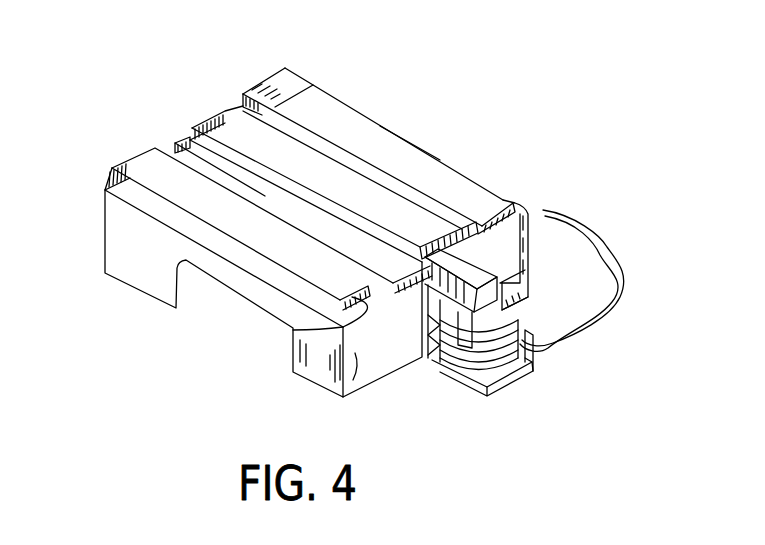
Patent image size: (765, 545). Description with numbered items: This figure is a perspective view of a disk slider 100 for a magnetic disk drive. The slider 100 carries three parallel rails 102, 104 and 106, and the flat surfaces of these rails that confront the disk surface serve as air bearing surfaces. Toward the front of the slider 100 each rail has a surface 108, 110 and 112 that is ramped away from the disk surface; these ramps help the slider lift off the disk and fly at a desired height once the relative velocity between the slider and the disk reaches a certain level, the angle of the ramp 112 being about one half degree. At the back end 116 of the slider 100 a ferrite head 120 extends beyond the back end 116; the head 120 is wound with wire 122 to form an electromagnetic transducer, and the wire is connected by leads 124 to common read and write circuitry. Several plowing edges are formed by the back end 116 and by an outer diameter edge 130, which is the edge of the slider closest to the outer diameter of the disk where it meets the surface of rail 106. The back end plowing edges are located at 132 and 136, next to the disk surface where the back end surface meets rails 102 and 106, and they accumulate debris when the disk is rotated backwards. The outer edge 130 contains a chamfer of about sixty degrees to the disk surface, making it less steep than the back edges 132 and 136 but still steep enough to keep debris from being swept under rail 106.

The slider 100 is at (495, 71).
The rail 102 is at (150, 187).
The rail 104 is at (227, 128).
The rail 106 is at (350, 120).
The ramped surface 108 is at (138, 160).
The ramped surface 110 is at (207, 123).
The ramp 112 is at (290, 82).
The back end 116 is at (340, 392).
The ferrite head 120 is at (520, 312).
The wire 122 is at (525, 368).
The leads 124 is at (606, 237).
The outer diameter edge 130 is at (433, 151).
The back end plowing edge 132 is at (293, 330).
The back end plowing edge 136 is at (508, 200).